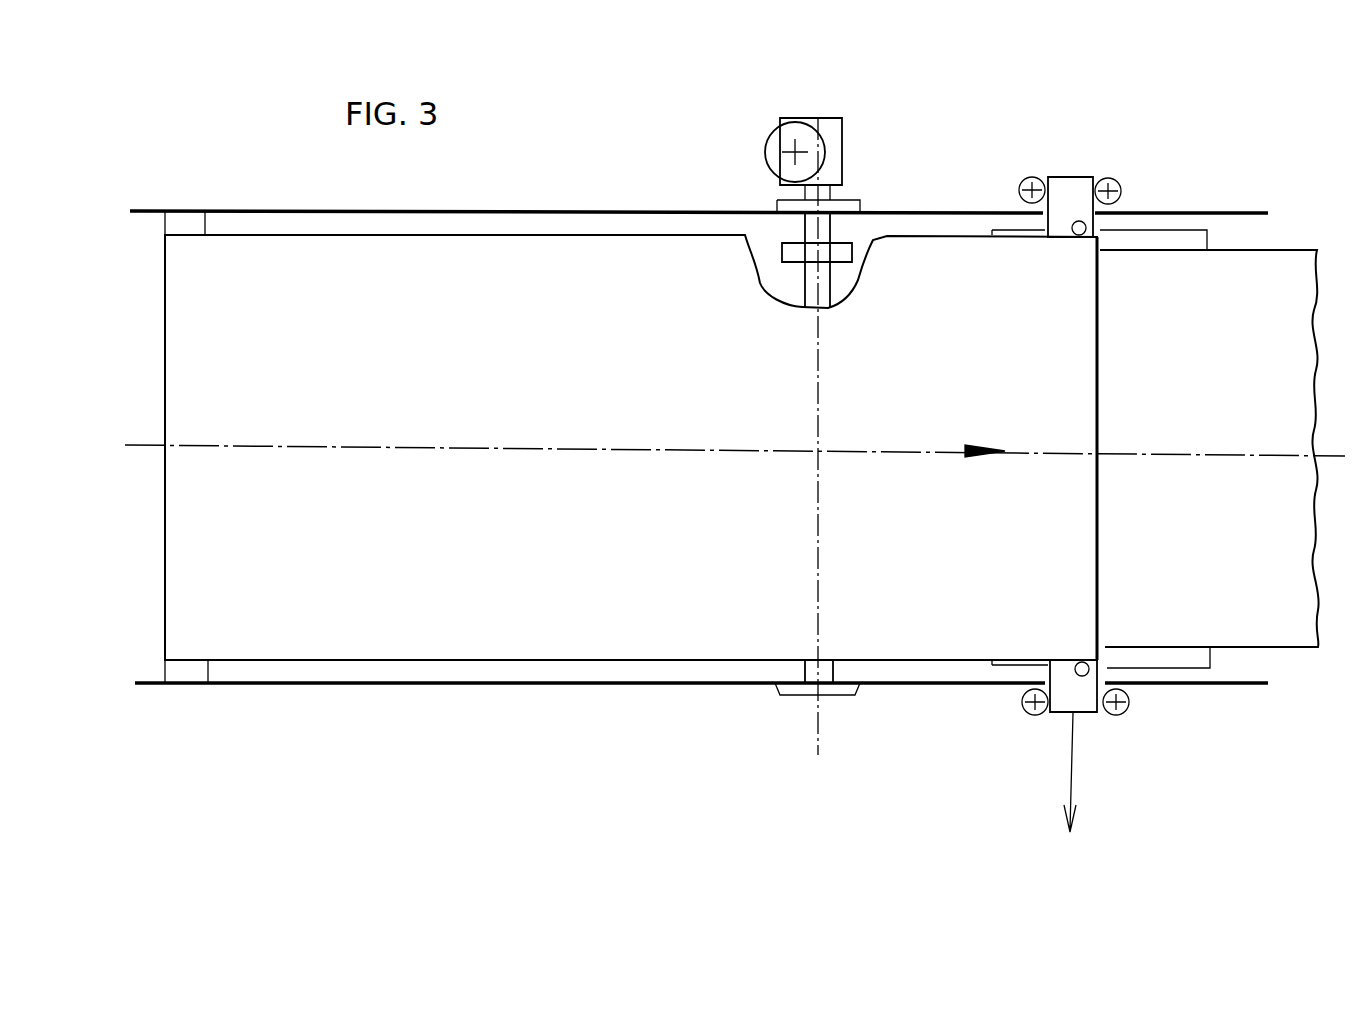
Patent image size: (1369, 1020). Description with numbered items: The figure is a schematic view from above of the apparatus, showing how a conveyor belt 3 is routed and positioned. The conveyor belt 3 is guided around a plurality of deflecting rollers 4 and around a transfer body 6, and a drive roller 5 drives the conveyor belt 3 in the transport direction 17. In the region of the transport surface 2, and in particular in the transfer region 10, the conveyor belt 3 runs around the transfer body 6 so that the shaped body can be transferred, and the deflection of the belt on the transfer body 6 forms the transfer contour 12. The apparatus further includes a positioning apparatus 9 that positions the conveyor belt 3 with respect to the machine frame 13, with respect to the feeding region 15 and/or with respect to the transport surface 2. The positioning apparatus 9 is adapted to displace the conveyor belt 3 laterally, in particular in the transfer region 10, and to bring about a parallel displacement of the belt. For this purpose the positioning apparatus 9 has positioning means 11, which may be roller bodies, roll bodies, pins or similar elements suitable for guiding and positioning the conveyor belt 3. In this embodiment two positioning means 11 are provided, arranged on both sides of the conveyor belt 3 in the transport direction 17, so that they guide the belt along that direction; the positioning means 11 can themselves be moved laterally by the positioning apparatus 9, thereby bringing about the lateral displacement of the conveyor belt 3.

The transport surface 2 is at (1280, 270).
The conveyor belt 3 is at (528, 255).
The deflecting rollers 4 is at (192, 222).
The drive roller 5 is at (822, 275).
The transfer body 6 is at (1083, 178).
The positioning apparatus 9 is at (1062, 183).
The transfer region 10 is at (1100, 305).
The positioning means 11 is at (1077, 221).
The transfer contour 12 is at (1128, 330).
The machine frame 13 is at (667, 686).
The feeding region 15 is at (243, 648).
The transport direction 17 is at (930, 455).